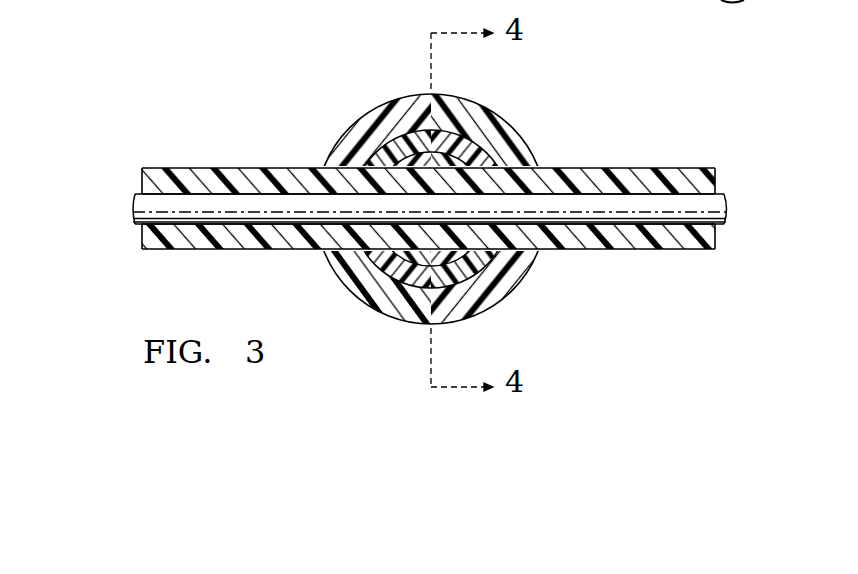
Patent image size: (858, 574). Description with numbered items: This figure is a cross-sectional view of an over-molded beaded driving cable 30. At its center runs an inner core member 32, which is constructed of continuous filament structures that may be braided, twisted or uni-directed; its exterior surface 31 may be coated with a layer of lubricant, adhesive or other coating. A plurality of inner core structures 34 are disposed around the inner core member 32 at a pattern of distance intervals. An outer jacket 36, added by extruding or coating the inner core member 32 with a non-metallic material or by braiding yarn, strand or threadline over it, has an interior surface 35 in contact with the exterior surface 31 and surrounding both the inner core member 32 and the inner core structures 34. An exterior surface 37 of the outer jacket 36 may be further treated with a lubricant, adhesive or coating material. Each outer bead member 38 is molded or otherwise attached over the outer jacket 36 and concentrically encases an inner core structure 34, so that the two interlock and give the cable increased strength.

The driving cable 30 is at (626, 137).
The exterior surface of the inner core member 31 is at (717, 197).
The inner core member 32 is at (722, 210).
The inner core structure 34 is at (468, 166).
The interior surface of the outer jacket 35 is at (154, 193).
The outer jacket 36 is at (277, 240).
The exterior surface of the outer jacket 37 is at (148, 250).
The outer bead member 38 is at (357, 125).